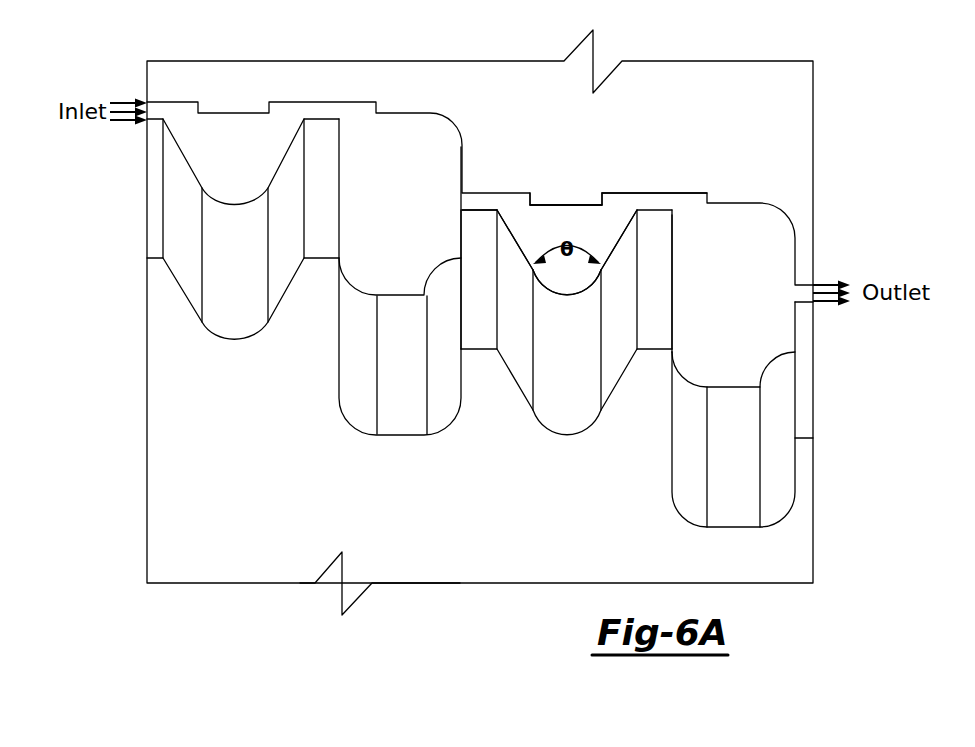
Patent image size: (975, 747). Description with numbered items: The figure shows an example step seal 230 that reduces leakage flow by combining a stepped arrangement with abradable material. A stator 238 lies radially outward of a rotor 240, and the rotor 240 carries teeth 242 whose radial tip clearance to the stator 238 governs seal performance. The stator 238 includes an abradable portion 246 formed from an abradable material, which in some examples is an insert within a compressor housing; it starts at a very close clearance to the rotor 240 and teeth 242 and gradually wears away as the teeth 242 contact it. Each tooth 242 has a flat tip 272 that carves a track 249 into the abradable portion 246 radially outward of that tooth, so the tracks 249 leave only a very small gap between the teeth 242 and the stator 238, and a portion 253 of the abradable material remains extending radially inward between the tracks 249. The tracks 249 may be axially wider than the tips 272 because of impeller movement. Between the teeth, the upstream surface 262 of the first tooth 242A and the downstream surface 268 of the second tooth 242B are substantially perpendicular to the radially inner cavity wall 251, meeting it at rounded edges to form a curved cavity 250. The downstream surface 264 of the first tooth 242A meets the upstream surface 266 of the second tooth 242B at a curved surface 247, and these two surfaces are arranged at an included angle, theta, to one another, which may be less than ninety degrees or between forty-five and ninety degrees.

The step seal 230 is at (464, 46).
The stator 238 is at (748, 90).
The rotor 240 is at (447, 570).
The teeth 242 is at (480, 246).
The first tooth 242A is at (477, 220).
The second tooth 242B is at (660, 227).
The abradable portion 246 is at (542, 203).
The curved surface 247 is at (566, 297).
The track 249 is at (647, 193).
The curved cavity 250 is at (373, 273).
The radially inner cavity wall 251 is at (398, 298).
The portion of abradable material 253 is at (582, 203).
The upstream surface of first tooth 262 is at (458, 222).
The downstream surface of first tooth 264 is at (513, 230).
The upstream surface of second tooth 266 is at (620, 230).
The downstream surface of second tooth 268 is at (673, 243).
The flat tip 272 is at (489, 209).